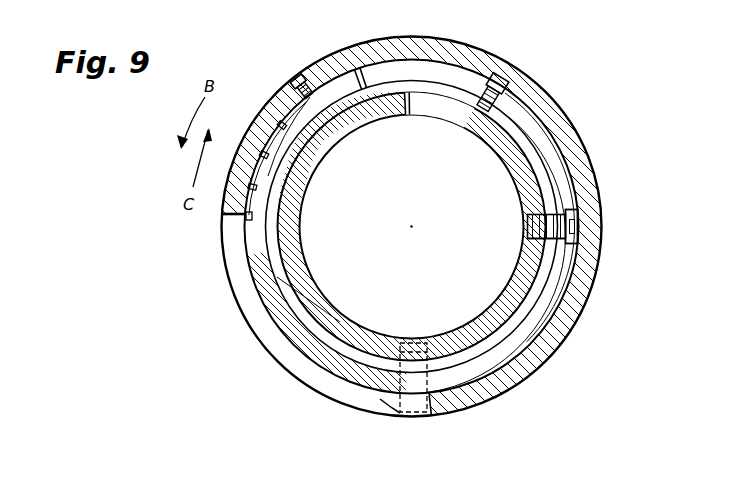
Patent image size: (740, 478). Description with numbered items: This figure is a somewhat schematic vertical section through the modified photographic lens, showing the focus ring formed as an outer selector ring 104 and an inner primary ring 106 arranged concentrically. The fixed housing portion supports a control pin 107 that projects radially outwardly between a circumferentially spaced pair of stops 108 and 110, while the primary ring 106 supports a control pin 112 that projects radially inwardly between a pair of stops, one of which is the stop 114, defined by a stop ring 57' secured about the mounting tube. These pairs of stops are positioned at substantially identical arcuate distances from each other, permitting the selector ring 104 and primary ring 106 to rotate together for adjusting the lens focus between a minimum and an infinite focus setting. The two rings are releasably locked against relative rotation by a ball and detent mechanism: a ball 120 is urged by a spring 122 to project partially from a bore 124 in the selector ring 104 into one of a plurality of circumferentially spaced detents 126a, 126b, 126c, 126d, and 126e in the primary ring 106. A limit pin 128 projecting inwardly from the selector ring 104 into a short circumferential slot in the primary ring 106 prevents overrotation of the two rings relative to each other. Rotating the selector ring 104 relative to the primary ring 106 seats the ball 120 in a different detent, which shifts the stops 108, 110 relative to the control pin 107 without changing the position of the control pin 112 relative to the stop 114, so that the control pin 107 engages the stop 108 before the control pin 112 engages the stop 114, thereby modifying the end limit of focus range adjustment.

The selector ring 104 is at (594, 165).
The primary ring 106 is at (310, 357).
The control pin 107 is at (397, 407).
The stop 108 is at (417, 415).
The stop 110 is at (224, 227).
The control pin 112 is at (535, 218).
The stop 114 is at (527, 240).
The ball 120 is at (357, 128).
The spring 122 is at (300, 75).
The bore 124 is at (297, 93).
The detent 126a is at (335, 150).
The detent 126b is at (313, 174).
The detent 126c is at (298, 194).
The detent 126d is at (300, 220).
The detent 126e is at (297, 245).
The limit pin 128 is at (515, 73).
The stop ring 57' is at (426, 243).